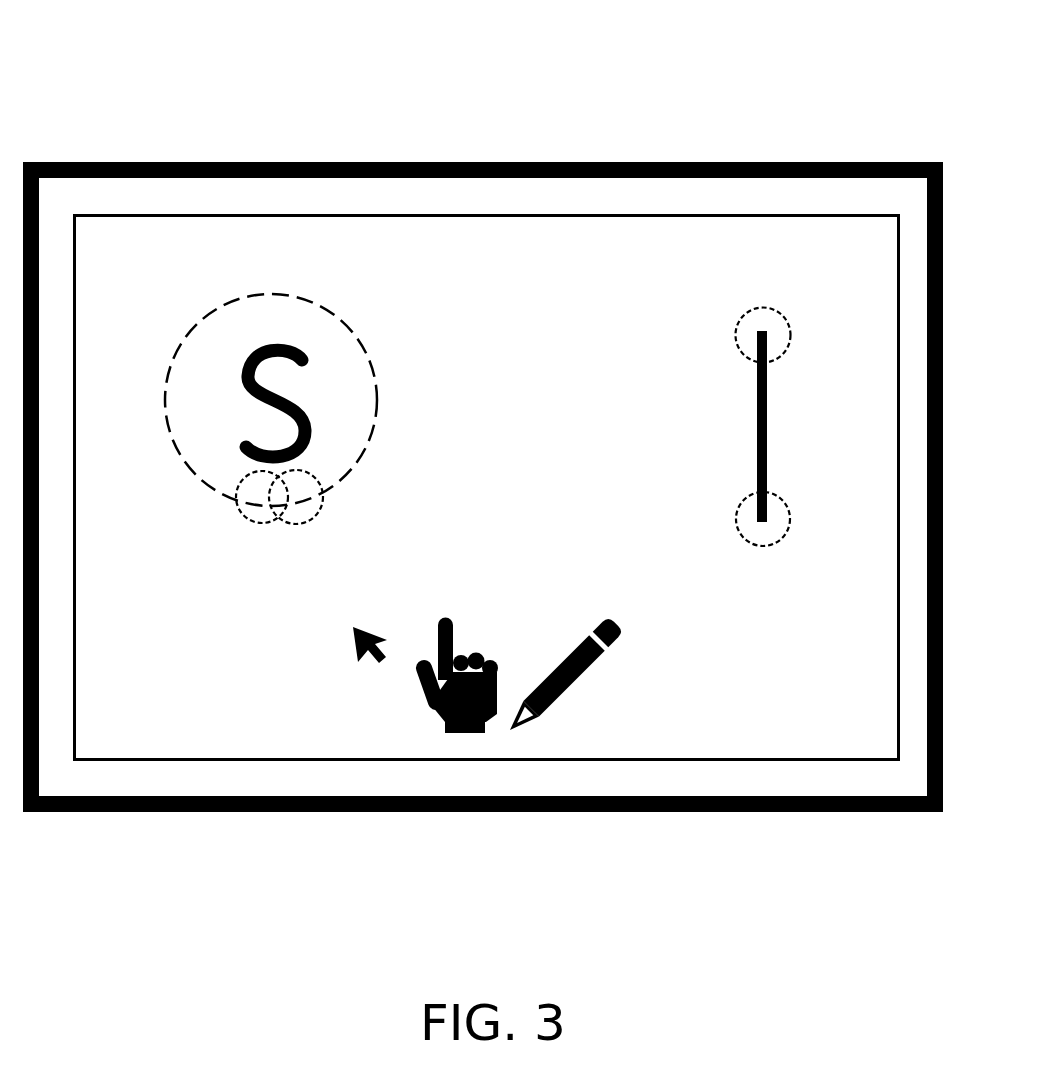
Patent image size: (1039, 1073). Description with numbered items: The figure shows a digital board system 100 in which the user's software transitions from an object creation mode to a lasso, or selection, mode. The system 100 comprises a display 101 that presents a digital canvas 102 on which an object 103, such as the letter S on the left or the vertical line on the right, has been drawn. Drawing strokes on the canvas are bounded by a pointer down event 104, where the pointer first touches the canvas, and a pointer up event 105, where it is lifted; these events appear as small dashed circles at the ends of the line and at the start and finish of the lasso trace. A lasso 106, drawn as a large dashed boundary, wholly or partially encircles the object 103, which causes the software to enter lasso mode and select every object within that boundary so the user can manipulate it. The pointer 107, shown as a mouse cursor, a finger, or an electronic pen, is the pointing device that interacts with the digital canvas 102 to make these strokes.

The digital board system 100 is at (124, 16).
The display 101 is at (455, 147).
The digital canvas 102 is at (213, 237).
The object 103 is at (506, 426).
The pointer down event 104 is at (515, 422).
The pointer up event 105 is at (548, 508).
The lasso 106 is at (271, 400).
The pointer 107 is at (488, 656).